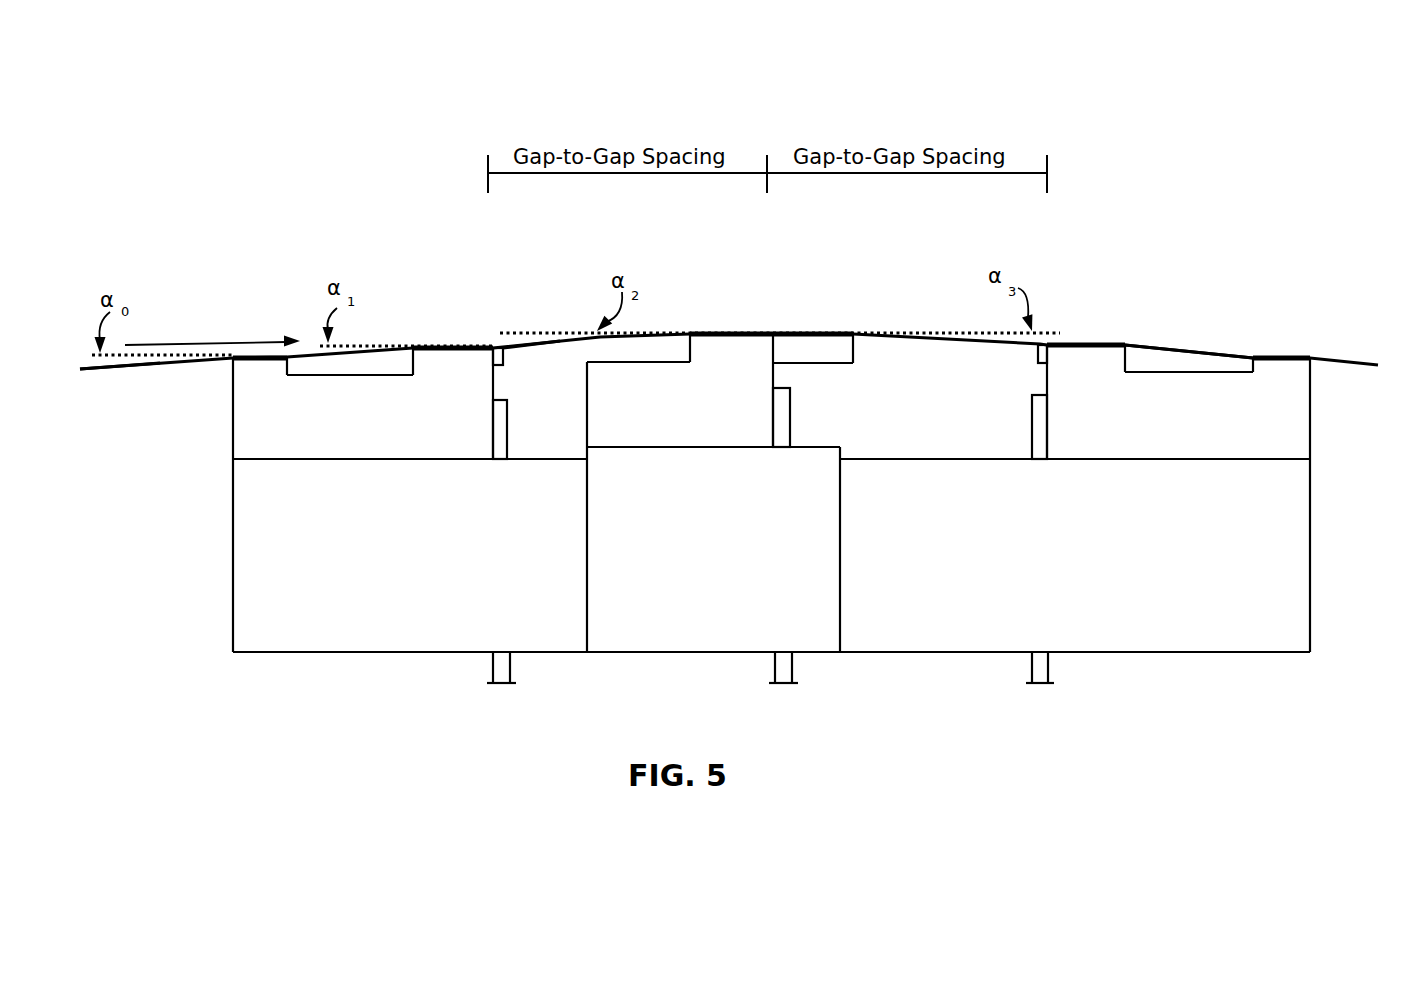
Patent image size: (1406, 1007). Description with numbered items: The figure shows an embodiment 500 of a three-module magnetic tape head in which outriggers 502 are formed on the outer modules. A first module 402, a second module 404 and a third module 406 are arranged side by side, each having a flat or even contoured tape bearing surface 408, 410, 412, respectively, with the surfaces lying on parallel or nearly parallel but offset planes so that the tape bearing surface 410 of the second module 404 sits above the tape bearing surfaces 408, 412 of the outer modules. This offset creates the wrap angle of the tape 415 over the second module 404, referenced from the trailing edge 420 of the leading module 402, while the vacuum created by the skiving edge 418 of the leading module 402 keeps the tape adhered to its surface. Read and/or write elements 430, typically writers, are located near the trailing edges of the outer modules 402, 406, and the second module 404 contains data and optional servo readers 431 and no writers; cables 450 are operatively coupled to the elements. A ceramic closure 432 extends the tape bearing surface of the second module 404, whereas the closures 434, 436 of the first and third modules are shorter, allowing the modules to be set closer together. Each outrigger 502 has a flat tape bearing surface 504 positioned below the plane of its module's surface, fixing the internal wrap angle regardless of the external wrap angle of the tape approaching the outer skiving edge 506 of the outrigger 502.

The embodiment 500 is at (392, 208).
The first module 402 is at (232, 426).
The second module 404 is at (665, 360).
The third module 406 is at (1310, 420).
The tape bearing surface 408 is at (462, 330).
The tape bearing surface 410 is at (718, 317).
The tape bearing surface 412 is at (1084, 330).
The tape 415 is at (1178, 348).
The skiving edge 418 is at (398, 360).
The trailing edge 420 is at (522, 350).
The read and/or write elements 430 is at (493, 330).
The data and optional servo readers 431 is at (773, 317).
The closure 432 is at (820, 365).
The closure 434 is at (504, 364).
The closure 436 is at (1035, 355).
The cables 450 is at (513, 668).
The outrigger 502 is at (245, 356).
The outrigger tape bearing surface 504 is at (260, 343).
The outer (skiving) edge 506 is at (212, 374).